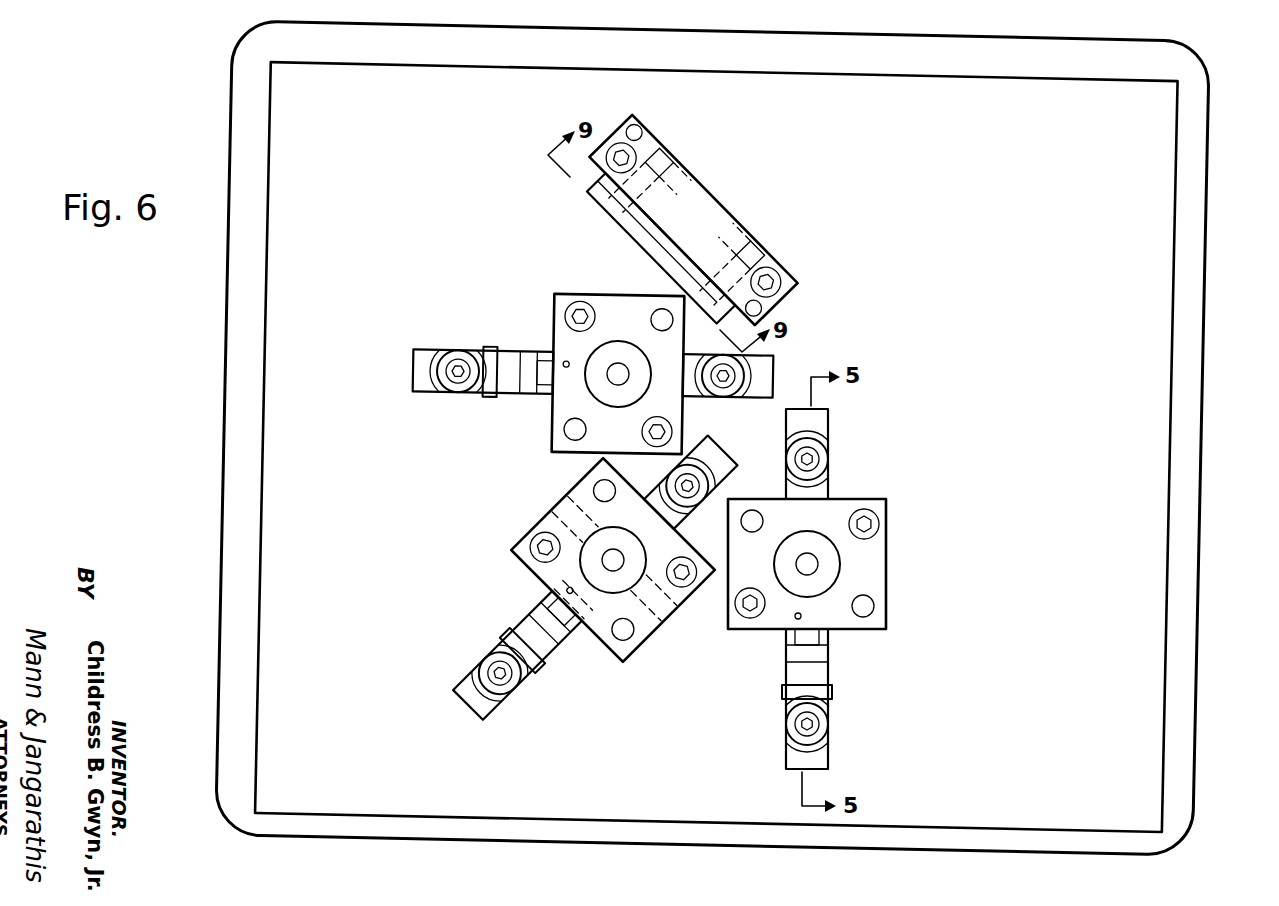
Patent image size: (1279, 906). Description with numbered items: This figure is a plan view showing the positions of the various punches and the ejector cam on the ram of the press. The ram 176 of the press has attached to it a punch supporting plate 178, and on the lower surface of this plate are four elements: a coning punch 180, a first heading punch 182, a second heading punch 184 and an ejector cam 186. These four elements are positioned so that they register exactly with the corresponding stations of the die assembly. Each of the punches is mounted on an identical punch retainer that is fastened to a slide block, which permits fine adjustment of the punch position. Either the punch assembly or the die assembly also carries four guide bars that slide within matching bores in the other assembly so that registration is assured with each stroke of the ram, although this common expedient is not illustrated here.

The ram 176 is at (1199, 552).
The punch supporting plate 178 is at (1163, 641).
The coning punch 180 is at (840, 589).
The first heading punch 182 is at (574, 556).
The second heading punch 184 is at (593, 373).
The ejector cam 186 is at (612, 200).